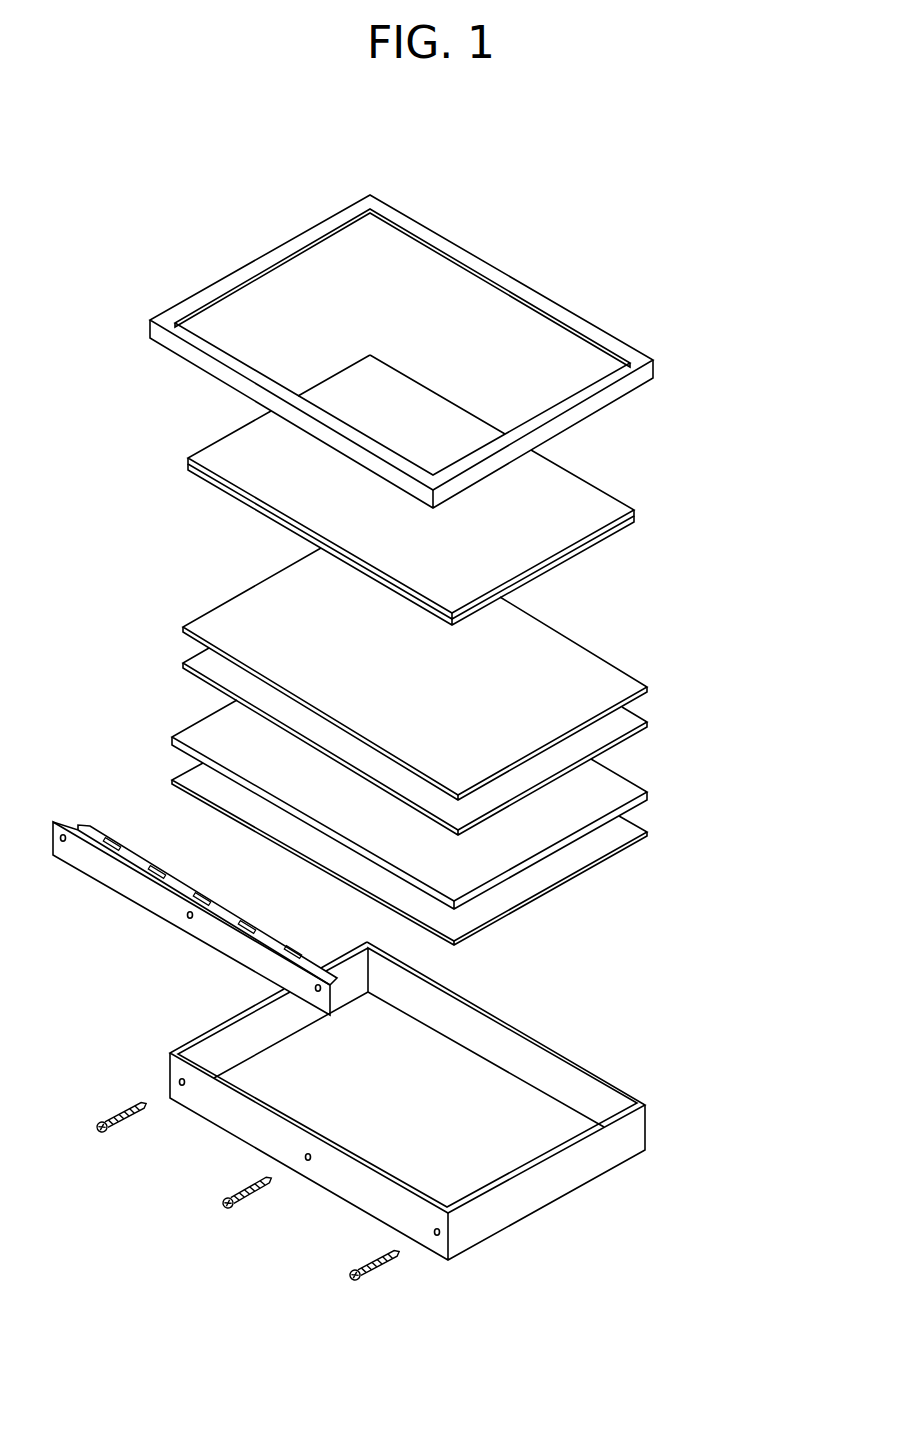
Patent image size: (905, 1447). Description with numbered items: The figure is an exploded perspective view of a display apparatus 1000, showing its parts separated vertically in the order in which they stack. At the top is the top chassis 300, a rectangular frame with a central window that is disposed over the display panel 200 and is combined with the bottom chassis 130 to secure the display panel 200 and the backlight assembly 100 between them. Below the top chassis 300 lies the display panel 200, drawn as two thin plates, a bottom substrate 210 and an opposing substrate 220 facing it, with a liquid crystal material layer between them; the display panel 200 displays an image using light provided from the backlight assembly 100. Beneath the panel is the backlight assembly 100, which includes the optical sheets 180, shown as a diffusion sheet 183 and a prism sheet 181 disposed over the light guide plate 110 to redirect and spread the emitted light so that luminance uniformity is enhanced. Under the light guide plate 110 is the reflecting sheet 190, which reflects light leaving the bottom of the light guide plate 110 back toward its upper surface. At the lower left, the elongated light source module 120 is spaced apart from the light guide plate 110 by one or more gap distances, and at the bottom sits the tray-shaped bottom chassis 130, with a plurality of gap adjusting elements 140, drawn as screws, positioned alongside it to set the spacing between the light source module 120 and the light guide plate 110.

The display apparatus 1000 is at (408, 183).
The top chassis 300 is at (657, 371).
The display panel 200 is at (480, 490).
The bottom substrate 210 is at (610, 506).
The opposing substrate 220 is at (628, 525).
The backlight assembly 100 is at (436, 940).
The optical sheets 180 is at (477, 691).
The diffusion sheet 183 is at (647, 687).
The prism sheet 181 is at (647, 722).
The light guide plate 110 is at (647, 792).
The reflecting sheet 190 is at (647, 832).
The light source module 120 is at (293, 945).
The bottom chassis 130 is at (610, 1155).
The gap adjusting elements 140 is at (408, 1215).